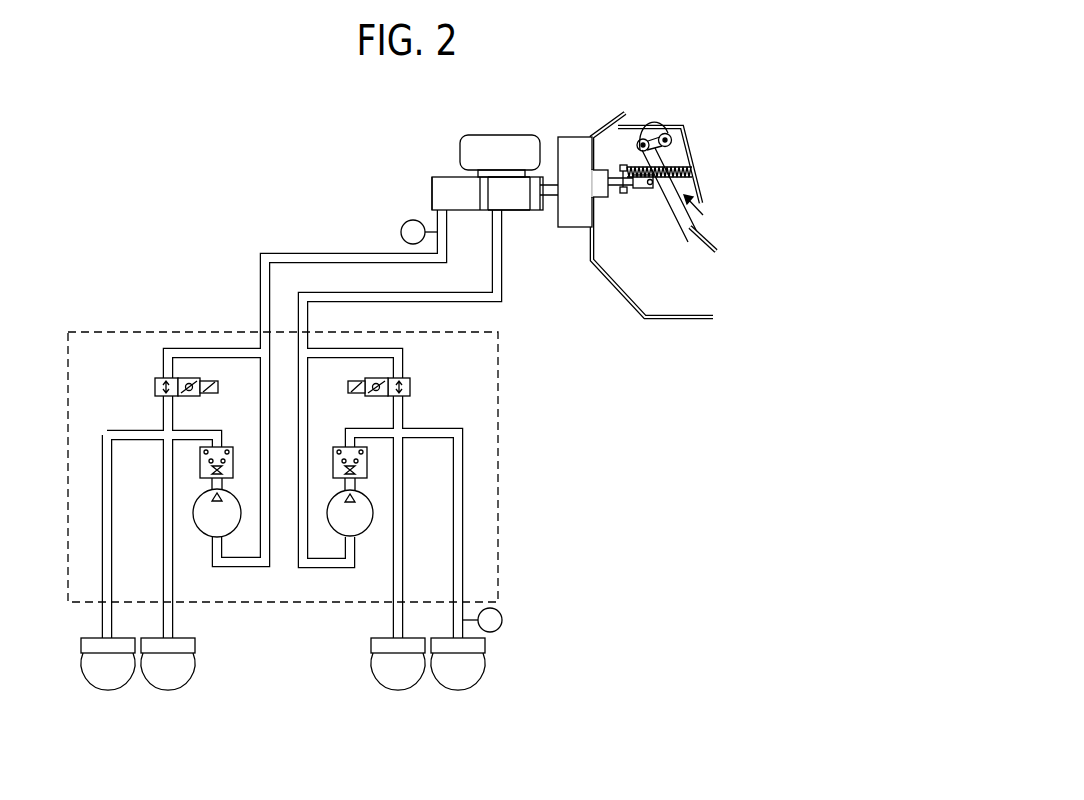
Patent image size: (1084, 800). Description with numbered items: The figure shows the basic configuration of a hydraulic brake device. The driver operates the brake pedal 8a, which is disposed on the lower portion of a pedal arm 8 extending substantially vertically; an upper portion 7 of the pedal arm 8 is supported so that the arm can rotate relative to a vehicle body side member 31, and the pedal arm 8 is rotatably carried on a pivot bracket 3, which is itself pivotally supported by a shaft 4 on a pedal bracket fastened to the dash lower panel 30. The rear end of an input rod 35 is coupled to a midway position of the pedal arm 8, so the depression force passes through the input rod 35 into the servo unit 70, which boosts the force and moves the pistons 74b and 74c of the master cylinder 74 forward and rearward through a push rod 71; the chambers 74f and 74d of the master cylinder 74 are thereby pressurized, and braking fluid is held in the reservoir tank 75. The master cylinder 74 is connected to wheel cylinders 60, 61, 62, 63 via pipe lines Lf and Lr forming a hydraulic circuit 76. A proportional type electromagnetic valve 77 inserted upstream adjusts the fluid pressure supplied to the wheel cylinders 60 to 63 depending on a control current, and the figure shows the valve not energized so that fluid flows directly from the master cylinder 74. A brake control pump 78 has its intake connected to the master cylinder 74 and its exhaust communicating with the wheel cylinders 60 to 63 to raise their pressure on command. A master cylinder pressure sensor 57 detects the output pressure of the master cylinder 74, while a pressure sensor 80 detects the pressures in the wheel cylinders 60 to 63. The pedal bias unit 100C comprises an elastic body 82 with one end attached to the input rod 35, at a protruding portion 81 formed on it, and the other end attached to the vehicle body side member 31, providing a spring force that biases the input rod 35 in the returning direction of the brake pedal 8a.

The reservoir tank 75 is at (499, 134).
The master cylinder 74 is at (430, 194).
The master cylinder front chamber 74f is at (447, 186).
The piston 74c is at (478, 186).
The master cylinder rear chamber 74d is at (508, 197).
The piston 74b is at (541, 176).
The push rod 71 is at (550, 200).
The servo unit 70 is at (575, 142).
The master cylinder pressure sensor 57 is at (400, 232).
The pipe line Lf is at (405, 265).
The pipe line Lr is at (503, 275).
The hydraulic circuit 76 is at (104, 330).
The proportional type electromagnetic valve for controlling fluid pressure 77 is at (196, 381).
The brake control pump 78 is at (211, 538).
The wheel cylinder 60 is at (108, 692).
The wheel cylinder 61 is at (168, 692).
The wheel cylinder 62 is at (398, 692).
The wheel cylinder 63 is at (458, 692).
The pressure sensor 80 is at (503, 620).
The dash lower panel 30 is at (600, 262).
The vehicle body side member 31 is at (692, 125).
The upper portion / collar 7 is at (668, 135).
The shaft 4 is at (672, 137).
The pivot bracket 3 is at (668, 148).
The pedal arm 8 is at (676, 238).
The brake pedal 8a is at (712, 240).
The elastic body 82 is at (692, 182).
The input rod 35 is at (625, 193).
The protruding portion 81 is at (625, 162).
The pedal bias unit 100C is at (703, 215).